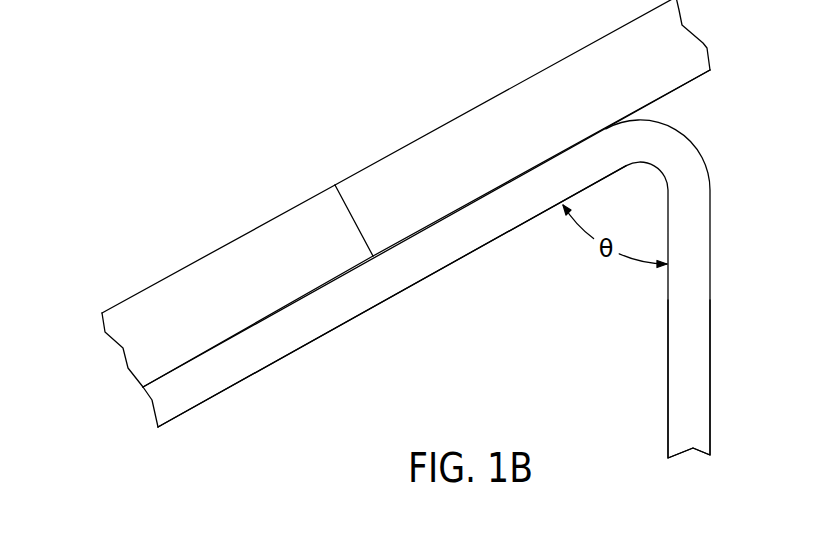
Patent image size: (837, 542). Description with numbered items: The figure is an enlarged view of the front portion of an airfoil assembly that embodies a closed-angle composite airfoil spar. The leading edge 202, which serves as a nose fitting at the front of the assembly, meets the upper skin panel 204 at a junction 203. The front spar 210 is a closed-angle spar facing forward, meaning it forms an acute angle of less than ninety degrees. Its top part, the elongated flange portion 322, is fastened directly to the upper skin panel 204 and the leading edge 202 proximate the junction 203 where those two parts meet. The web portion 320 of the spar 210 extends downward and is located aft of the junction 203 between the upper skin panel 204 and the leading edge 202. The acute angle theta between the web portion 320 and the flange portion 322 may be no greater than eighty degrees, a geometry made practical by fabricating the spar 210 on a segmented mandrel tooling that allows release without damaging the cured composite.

The leading edge 202 is at (182, 273).
The junction 203 is at (334, 189).
The upper skin panel 204 is at (453, 125).
The spar 210 is at (361, 308).
The web portion 320 is at (712, 427).
The elongated flange portion 322 is at (250, 377).